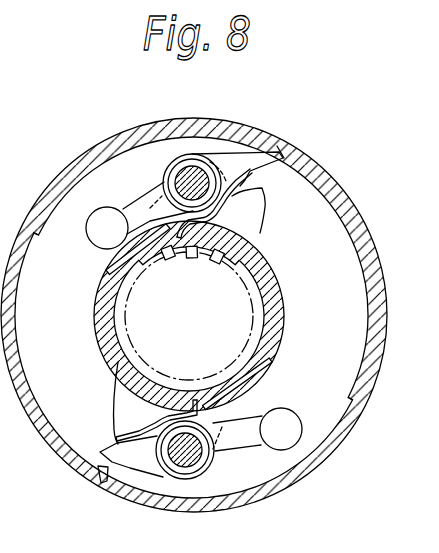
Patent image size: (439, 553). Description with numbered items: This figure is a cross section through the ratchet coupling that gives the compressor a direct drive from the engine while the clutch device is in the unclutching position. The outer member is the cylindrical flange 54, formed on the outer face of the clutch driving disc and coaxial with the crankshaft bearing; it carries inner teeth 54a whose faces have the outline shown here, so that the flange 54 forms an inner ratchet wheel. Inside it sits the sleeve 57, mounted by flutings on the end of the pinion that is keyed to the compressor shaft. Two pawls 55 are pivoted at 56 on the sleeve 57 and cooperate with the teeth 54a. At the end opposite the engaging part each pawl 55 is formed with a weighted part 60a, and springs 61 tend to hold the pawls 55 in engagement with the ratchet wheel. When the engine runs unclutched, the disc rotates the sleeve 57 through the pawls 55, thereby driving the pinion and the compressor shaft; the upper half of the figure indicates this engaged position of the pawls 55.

The cylindrical flange 54 is at (236, 133).
The inner teeth 54a is at (88, 500).
The pawls 55 is at (165, 208).
The pivot 56 is at (187, 178).
The sleeve 57 is at (274, 310).
The weighted parts 60a is at (106, 225).
The springs 61 is at (251, 180).